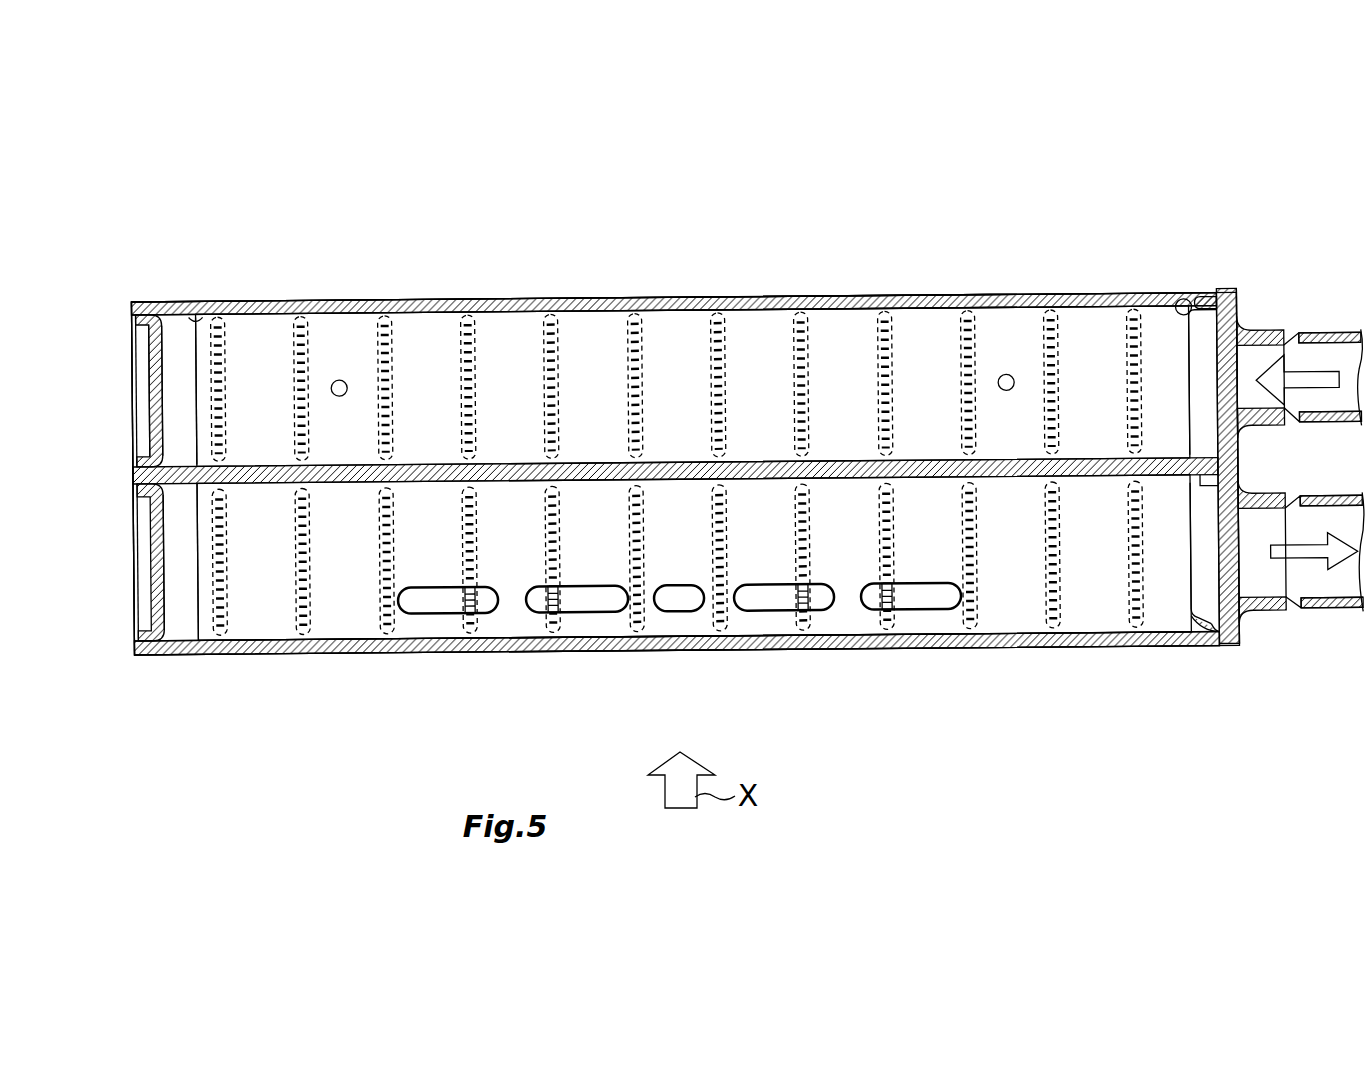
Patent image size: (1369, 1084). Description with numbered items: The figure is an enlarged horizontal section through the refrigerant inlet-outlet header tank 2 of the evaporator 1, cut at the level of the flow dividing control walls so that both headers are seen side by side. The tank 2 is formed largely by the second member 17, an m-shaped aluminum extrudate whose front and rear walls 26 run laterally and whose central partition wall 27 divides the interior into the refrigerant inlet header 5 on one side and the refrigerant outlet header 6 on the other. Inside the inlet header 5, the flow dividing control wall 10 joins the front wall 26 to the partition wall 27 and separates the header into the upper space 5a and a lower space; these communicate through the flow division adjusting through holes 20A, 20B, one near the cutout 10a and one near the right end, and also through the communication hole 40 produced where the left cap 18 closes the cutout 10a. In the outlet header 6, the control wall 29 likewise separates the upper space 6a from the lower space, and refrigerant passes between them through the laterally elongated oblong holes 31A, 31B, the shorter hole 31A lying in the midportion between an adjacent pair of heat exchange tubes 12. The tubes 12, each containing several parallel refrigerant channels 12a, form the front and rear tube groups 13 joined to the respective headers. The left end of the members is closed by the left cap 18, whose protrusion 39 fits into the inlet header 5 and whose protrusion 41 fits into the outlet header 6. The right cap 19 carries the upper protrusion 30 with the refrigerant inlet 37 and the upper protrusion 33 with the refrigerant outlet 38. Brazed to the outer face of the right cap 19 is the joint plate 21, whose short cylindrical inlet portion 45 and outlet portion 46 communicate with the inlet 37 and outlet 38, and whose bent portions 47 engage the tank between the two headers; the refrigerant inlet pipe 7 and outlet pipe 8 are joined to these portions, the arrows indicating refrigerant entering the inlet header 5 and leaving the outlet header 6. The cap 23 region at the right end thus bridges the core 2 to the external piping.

The heat exchanger 1 is at (1105, 168).
The refrigerant inlet-outlet header tank 2 is at (705, 245).
The refrigerant inlet header 5 is at (692, 434).
The upper space of the inlet header 5a is at (762, 318).
The refrigerant outlet header 6 is at (692, 546).
The upper space of the outlet header 6a is at (1000, 616).
The refrigerant inlet pipe 7 is at (1331, 335).
The refrigerant outlet pipe 8 is at (1336, 612).
The flow dividing control wall 10 is at (505, 345).
The cutout 10a is at (208, 320).
The heat exchange tubes 12 is at (625, 372).
The refrigerant channels 12a is at (648, 385).
The tube groups 13 is at (213, 405).
The second member 17 is at (910, 298).
The left cap 18 is at (133, 300).
The right cap 19 is at (1215, 292).
The flow division adjusting through hole 20A is at (341, 380).
The flow division adjusting through hole 20B is at (1008, 380).
The joint plate 21 is at (1231, 290).
The right end plate 23 is at (1120, 345).
The walls 26 is at (855, 299).
The partition wall 27 is at (835, 470).
The flow dividing control wall 29 is at (340, 582).
The upper leftward protrusion 30 is at (1165, 300).
The oblong through hole 31A is at (678, 606).
The oblong through holes 31B is at (447, 604).
The upper leftward protrusion 33 is at (1190, 614).
The refrigerant inlet 37 is at (1181, 305).
The refrigerant outlet 38 is at (1195, 642).
The rightward protrusion 39 is at (172, 326).
The communication hole 40 is at (180, 383).
The upper rightward protrusion 41 is at (165, 645).
The refrigerant inlet portion 45 is at (1268, 330).
The refrigerant outlet portion 46 is at (1268, 612).
The bent portion 47 is at (1212, 494).